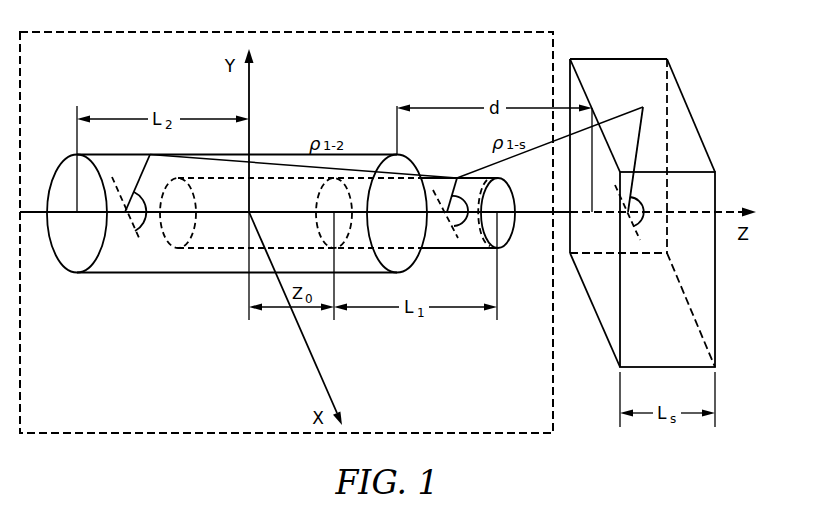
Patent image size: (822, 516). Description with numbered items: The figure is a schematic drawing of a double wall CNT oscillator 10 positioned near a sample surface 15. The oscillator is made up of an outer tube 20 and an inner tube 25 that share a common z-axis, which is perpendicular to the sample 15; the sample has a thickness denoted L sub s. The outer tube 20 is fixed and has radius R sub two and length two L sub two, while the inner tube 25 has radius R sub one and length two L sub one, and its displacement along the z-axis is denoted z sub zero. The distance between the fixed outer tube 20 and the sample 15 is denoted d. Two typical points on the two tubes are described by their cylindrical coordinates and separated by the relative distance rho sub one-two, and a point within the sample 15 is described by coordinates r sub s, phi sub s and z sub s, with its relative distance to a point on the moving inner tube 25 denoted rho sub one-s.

The double wall CNT oscillator 10 is at (707, 62).
The sample surface 15 is at (715, 290).
The outer tube 20 is at (135, 273).
The inner tube 25 is at (463, 249).